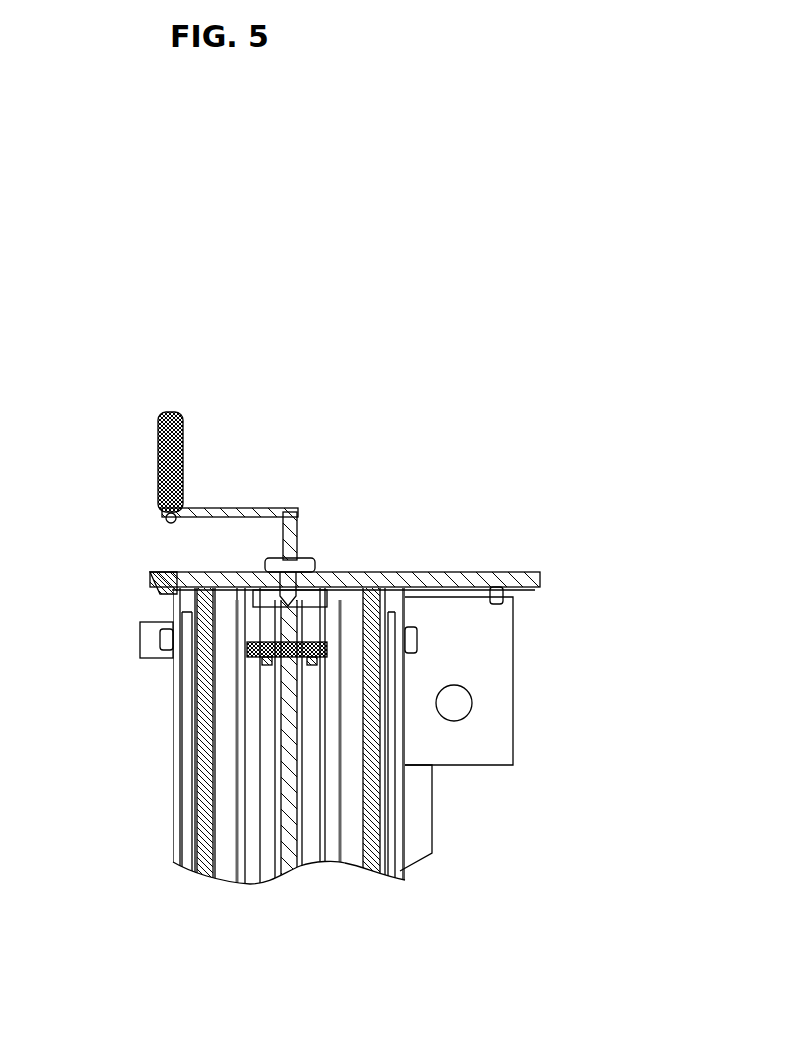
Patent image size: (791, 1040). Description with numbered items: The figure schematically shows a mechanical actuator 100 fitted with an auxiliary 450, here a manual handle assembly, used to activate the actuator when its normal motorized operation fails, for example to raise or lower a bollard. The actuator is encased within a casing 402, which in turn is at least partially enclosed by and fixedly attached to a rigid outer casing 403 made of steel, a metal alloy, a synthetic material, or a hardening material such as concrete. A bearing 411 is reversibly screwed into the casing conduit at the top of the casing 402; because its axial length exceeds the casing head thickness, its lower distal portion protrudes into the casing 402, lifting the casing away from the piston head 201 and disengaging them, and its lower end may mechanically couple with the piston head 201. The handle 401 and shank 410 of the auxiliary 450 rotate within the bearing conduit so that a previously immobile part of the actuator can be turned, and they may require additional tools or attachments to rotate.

The mechanical actuator 100 is at (253, 864).
The piston head 201 is at (251, 595).
The handle 401 is at (188, 446).
The shank 410 is at (299, 533).
The bearing 411 is at (315, 564).
The auxiliary 450 is at (311, 483).
The casing 402 is at (399, 680).
The outer casing 403 is at (433, 806).